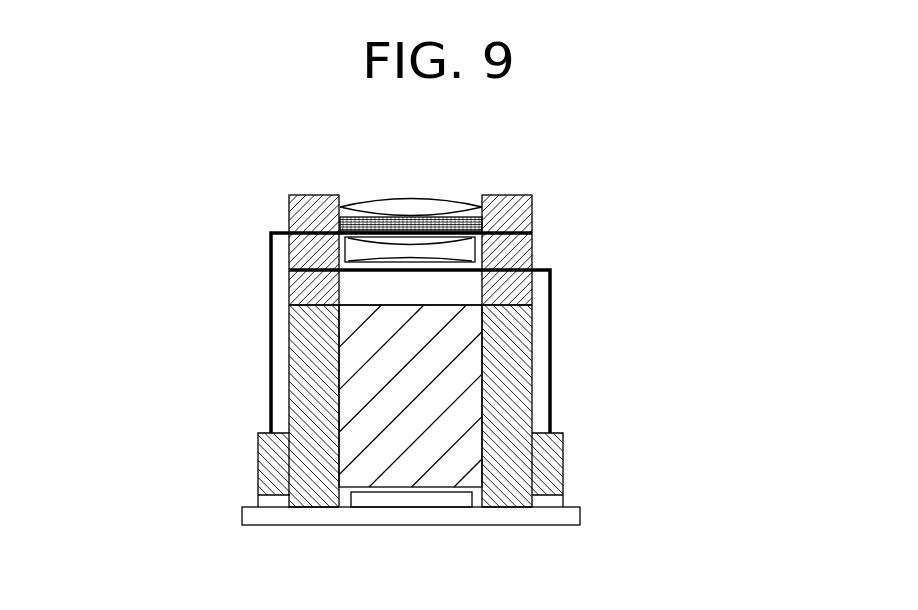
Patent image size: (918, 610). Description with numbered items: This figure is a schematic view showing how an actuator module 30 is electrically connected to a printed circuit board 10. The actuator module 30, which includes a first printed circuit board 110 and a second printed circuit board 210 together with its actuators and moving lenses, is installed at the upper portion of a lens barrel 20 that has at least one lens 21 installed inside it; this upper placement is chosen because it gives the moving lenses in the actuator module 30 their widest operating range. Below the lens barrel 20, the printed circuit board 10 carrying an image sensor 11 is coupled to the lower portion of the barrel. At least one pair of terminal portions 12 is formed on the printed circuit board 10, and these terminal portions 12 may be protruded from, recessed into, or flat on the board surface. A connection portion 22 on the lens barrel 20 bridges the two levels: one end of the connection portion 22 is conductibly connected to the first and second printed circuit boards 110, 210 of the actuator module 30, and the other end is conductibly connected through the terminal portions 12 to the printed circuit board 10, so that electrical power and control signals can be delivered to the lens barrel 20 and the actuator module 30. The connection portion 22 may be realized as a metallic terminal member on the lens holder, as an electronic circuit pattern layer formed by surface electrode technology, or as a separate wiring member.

The printed circuit board 10 is at (578, 516).
The image sensor 11 is at (442, 498).
The terminal portion 12 is at (560, 497).
The lens barrel 20 is at (300, 370).
The lens 21 is at (465, 400).
The connection portion 22 is at (272, 462).
The actuator module 30 is at (561, 194).
The first printed circuit board 110 is at (271, 297).
The second printed circuit board 210 is at (550, 352).